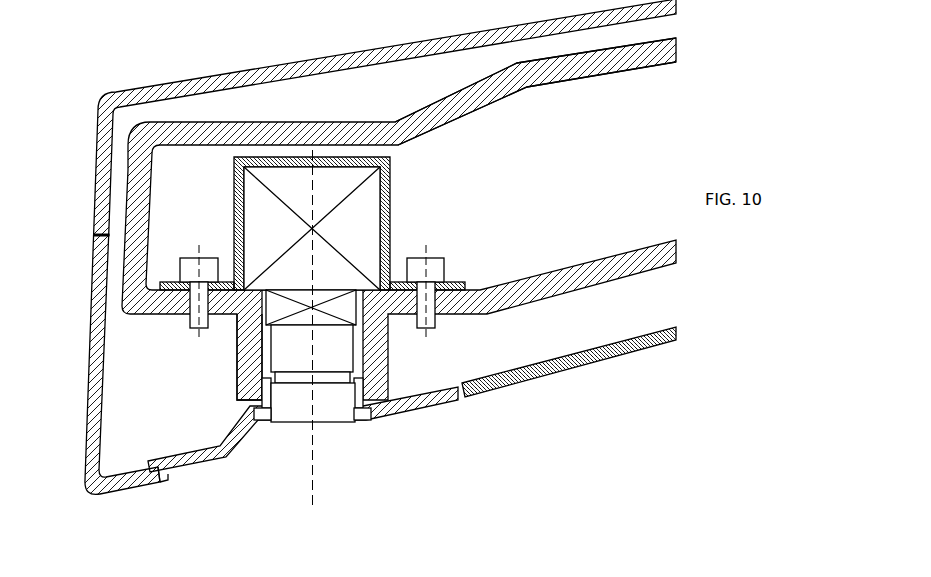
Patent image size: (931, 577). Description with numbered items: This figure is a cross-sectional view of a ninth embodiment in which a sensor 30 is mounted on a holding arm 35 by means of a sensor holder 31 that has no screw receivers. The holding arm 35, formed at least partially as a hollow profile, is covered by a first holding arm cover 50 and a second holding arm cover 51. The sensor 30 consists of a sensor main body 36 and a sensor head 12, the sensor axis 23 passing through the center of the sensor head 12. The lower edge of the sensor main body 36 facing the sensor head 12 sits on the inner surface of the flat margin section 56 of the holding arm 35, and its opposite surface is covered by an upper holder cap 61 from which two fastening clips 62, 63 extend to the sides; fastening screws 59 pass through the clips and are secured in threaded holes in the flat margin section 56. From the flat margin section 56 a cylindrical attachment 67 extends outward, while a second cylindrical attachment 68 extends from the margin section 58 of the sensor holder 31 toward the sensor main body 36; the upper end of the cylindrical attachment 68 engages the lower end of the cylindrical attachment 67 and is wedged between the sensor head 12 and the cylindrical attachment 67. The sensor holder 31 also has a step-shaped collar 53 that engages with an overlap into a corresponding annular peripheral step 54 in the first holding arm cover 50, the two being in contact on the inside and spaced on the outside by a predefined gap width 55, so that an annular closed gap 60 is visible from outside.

The sensor head 12 is at (320, 348).
The sensor axis 23 is at (314, 493).
The sensor 30 is at (357, 283).
The sensor holder 31 is at (296, 477).
The holding arm 35 is at (472, 107).
The sensor main body 36 is at (332, 240).
The first holding arm cover 50 is at (94, 268).
The second holding arm cover 51 is at (98, 198).
The step-shaped collar 53 is at (161, 454).
The annular peripheral step 54 is at (155, 481).
The gap width 55 is at (167, 479).
The flat margin section 56 is at (163, 314).
The margin section 58 is at (252, 409).
The fastening screws 59 is at (190, 258).
The annular closed gap 60 is at (458, 401).
The upper holder cap 61 is at (392, 215).
The fastening clip 62 is at (163, 282).
The fastening clip 63 is at (462, 282).
The cylindrical attachment 67 is at (237, 363).
The cylindrical attachment 68 is at (268, 422).